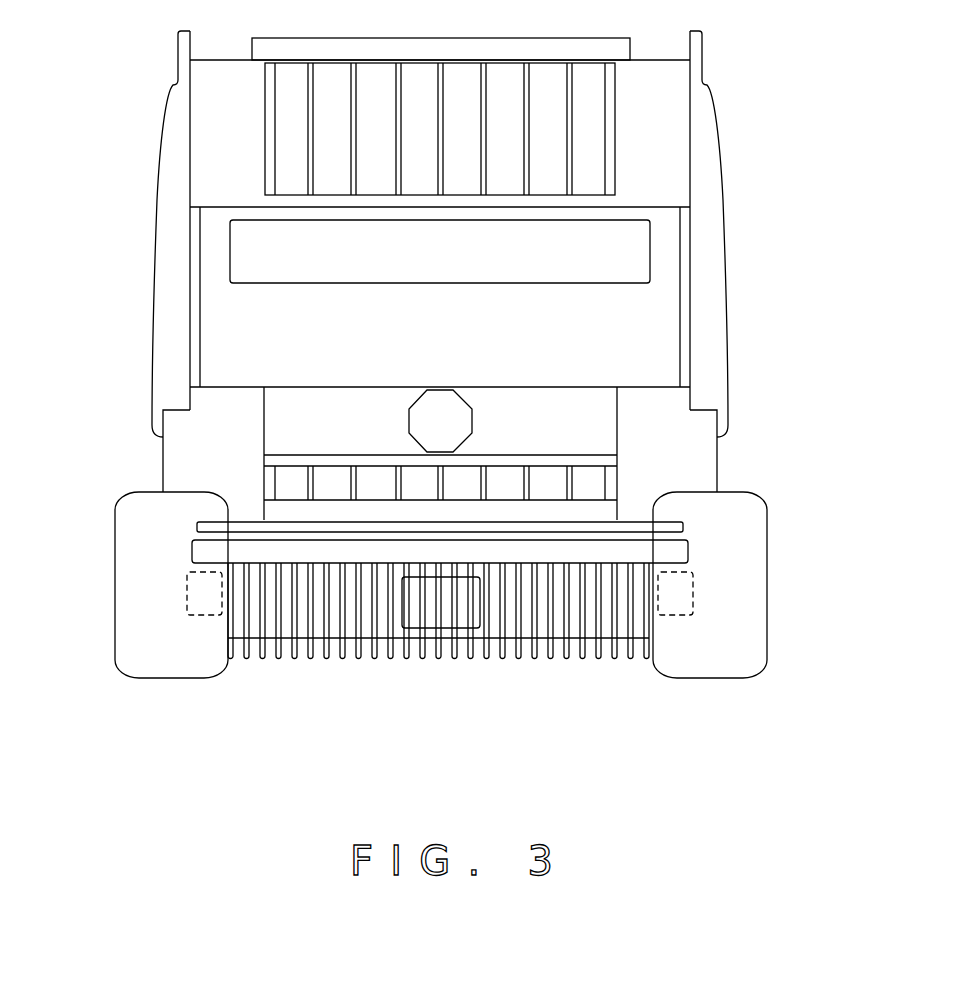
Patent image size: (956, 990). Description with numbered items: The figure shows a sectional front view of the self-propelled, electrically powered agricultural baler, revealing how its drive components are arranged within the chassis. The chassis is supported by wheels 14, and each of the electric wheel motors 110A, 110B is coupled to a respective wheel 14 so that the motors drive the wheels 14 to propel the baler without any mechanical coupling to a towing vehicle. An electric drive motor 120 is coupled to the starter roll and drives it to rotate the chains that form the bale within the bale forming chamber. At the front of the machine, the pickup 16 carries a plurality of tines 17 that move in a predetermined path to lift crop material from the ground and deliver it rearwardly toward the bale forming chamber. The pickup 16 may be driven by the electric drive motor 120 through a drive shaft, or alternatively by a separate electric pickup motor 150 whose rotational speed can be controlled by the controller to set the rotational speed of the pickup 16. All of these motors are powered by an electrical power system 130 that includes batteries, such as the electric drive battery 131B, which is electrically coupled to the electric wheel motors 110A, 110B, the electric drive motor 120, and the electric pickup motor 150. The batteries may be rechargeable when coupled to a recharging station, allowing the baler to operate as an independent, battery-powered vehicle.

The wheels 14 is at (133, 672).
The pickup 16 is at (440, 651).
The tines 17 is at (370, 660).
The electric wheel motor 110A is at (186, 597).
The electric wheel motor 110B is at (693, 592).
The electric drive motor 120 is at (470, 403).
The electrical power system 130 is at (282, 337).
The electric drive battery 131B is at (650, 257).
The electric pickup motor 150 is at (463, 628).